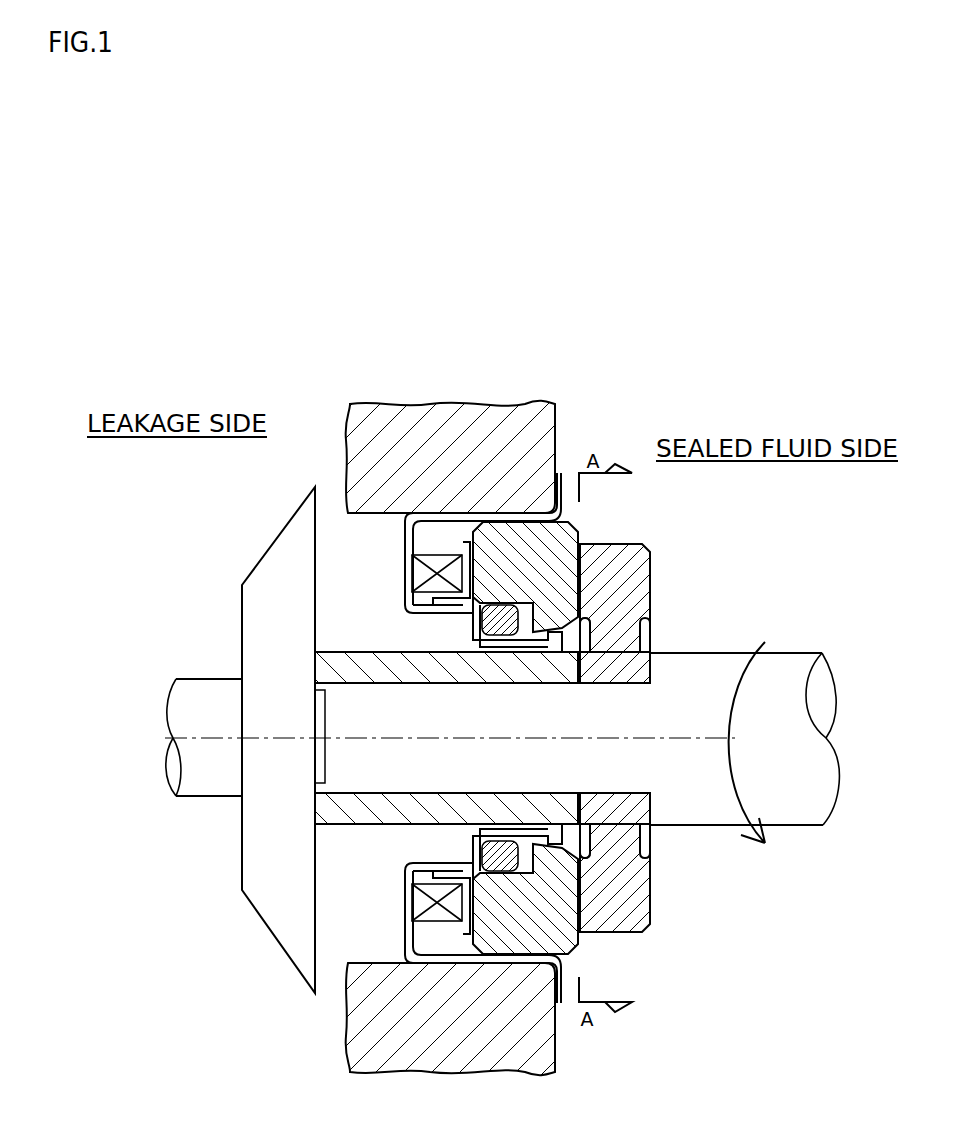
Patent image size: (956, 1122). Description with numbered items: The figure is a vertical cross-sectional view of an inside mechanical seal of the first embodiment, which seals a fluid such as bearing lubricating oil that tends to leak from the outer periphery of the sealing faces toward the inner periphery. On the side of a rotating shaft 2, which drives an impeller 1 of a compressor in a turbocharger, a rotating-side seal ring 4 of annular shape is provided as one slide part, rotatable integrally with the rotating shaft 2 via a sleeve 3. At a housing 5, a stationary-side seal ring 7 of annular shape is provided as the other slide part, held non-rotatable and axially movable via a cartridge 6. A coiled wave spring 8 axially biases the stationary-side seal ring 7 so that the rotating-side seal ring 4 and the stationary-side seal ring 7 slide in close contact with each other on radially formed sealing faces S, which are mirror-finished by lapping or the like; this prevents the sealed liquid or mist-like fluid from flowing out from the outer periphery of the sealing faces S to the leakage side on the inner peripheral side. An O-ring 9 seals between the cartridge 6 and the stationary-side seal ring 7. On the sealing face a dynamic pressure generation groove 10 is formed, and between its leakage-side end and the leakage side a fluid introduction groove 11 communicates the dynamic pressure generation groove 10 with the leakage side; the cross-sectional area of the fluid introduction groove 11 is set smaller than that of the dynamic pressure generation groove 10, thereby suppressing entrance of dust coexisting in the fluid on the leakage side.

The impeller 1 is at (270, 580).
The rotating shaft 2 is at (543, 727).
The sleeve 3 is at (338, 665).
The rotating-side seal ring 4 is at (643, 560).
The housing 5 is at (428, 425).
The cartridge 6 is at (408, 548).
The stationary-side seal ring 7 is at (558, 543).
The coiled wave spring 8 is at (437, 567).
The O-ring 9 is at (475, 620).
The dynamic pressure generation groove 10 is at (590, 582).
The fluid introduction groove 11 is at (588, 607).
The sealing faces S is at (568, 556).